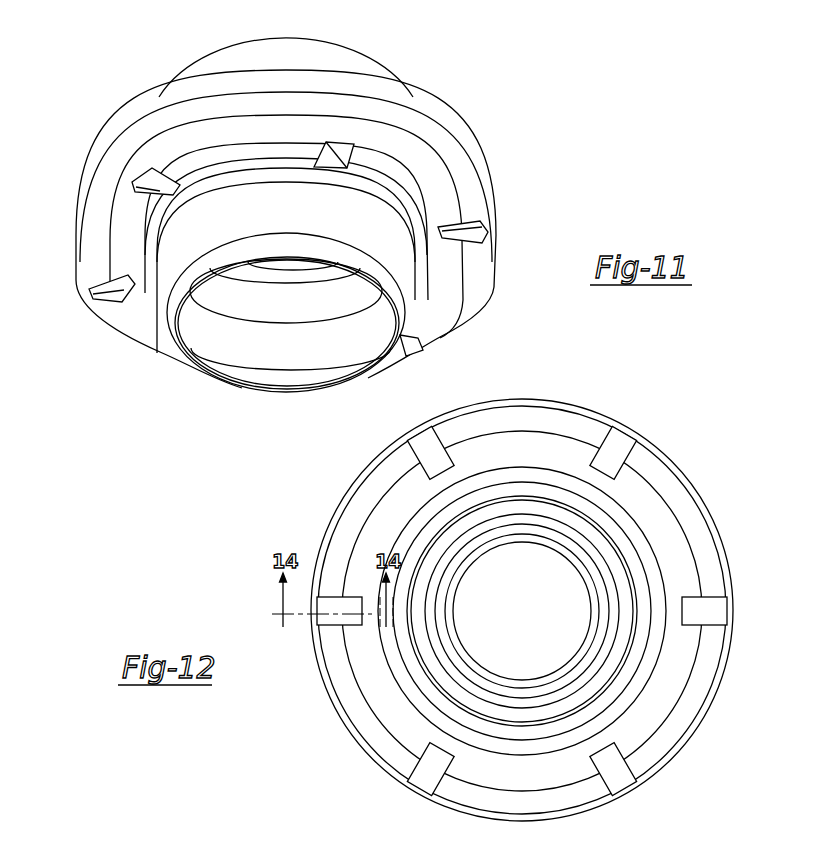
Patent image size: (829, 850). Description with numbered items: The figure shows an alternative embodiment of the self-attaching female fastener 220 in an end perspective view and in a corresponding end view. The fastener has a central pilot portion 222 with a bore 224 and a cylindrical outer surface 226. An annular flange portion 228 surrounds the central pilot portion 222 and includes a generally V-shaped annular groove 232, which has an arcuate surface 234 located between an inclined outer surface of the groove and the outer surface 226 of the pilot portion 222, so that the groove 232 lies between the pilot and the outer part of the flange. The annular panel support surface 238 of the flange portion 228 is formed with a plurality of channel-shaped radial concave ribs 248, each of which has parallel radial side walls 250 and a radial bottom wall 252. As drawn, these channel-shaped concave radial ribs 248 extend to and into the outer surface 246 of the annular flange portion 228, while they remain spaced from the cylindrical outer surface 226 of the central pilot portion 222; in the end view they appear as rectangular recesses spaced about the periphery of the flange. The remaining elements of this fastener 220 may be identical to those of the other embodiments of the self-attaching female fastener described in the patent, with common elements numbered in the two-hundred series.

In FIG. 11, the self-attaching female fastener 220 is at (441, 92).
In FIG. 12, the self-attaching female fastener 220 is at (348, 452).
In FIG. 11, the central pilot portion 222 is at (290, 218).
In FIG. 12, the central pilot portion 222 is at (636, 535).
In FIG. 11, the bore 224 is at (262, 347).
In FIG. 12, the bore 224 is at (577, 617).
In FIG. 11, the cylindrical outer surface 226 is at (240, 207).
In FIG. 11, the annular flange portion 228 is at (431, 155).
In FIG. 12, the annular flange portion 228 is at (696, 725).
In FIG. 11, the annular groove 232 is at (441, 283).
In FIG. 12, the annular groove 232 is at (403, 712).
In FIG. 11, the arcuate surface 234 is at (286, 308).
In FIG. 11, the annular panel support surface 238 is at (130, 330).
In FIG. 12, the annular panel support surface 238 is at (507, 418).
In FIG. 11, the outer surface 246 is at (490, 202).
In FIG. 12, the outer surface 246 is at (345, 496).
In FIG. 11, the channel-shaped radial concave ribs 248 is at (337, 153).
In FIG. 12, the channel-shaped radial concave ribs 248 is at (425, 440).
In FIG. 11, the radial side walls 250 is at (150, 190).
In FIG. 11, the radial bottom wall 252 is at (92, 293).
In FIG. 12, the radial bottom wall 252 is at (622, 775).